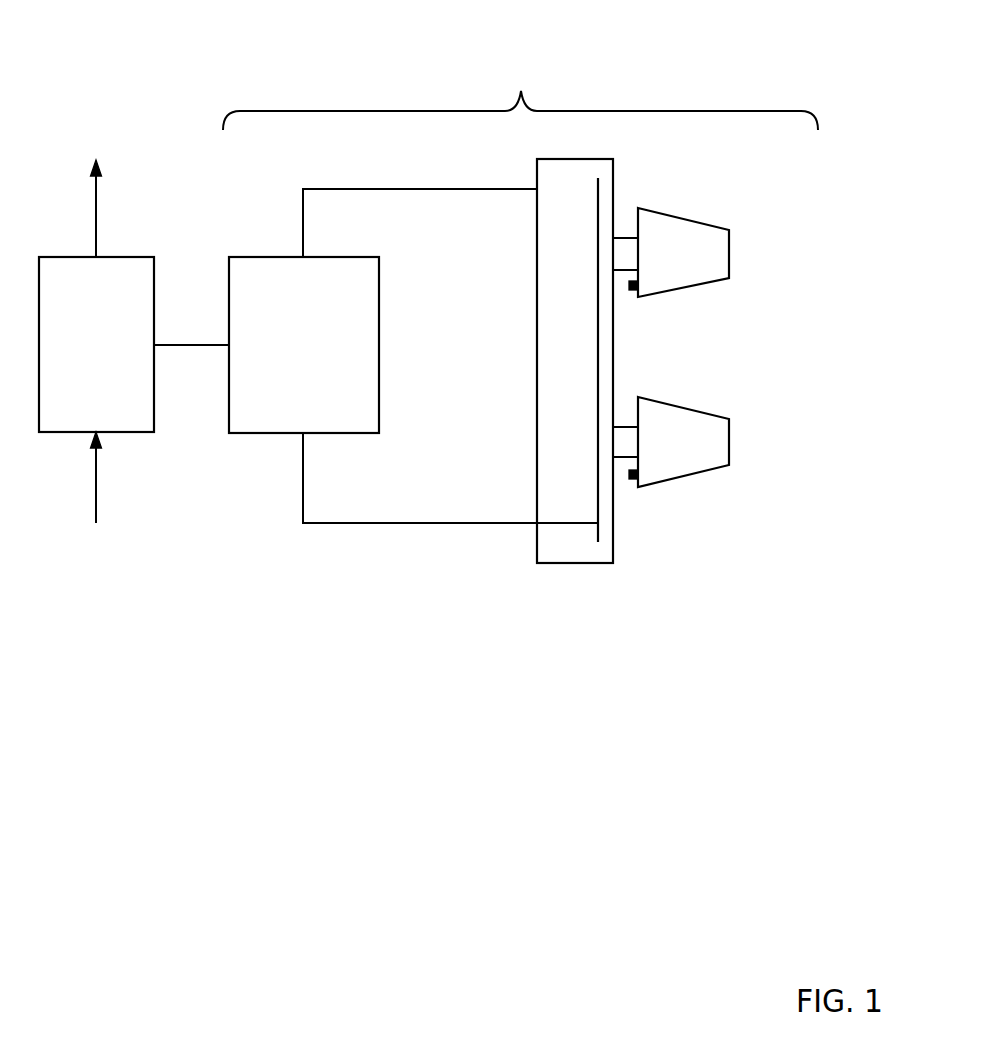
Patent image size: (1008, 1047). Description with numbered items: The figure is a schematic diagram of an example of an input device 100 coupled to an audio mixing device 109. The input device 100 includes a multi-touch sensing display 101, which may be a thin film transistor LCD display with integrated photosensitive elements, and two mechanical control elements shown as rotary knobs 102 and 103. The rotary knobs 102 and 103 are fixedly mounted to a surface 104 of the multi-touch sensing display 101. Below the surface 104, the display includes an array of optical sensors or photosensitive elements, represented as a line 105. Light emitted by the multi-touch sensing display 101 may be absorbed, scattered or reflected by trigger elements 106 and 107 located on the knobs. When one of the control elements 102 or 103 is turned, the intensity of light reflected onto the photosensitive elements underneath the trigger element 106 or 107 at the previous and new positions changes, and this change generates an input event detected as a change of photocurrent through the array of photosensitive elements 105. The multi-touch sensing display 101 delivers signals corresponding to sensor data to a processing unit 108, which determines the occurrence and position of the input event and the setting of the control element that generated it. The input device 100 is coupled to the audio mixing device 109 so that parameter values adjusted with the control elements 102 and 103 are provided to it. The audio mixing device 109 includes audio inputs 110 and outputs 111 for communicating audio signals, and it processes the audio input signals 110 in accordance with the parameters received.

The input device 100 is at (555, 111).
The multi-touch sensing display 101 is at (602, 577).
The rotary knob 102 is at (719, 228).
The rotary knob 103 is at (719, 416).
The surface 104 is at (613, 172).
The array of photosensitive elements 105 is at (598, 537).
The trigger element 106 is at (633, 290).
The trigger element 107 is at (633, 479).
The processing unit 108 is at (349, 433).
The audio mixing device 109 is at (142, 432).
The audio inputs 110 is at (96, 503).
The audio outputs 111 is at (96, 214).